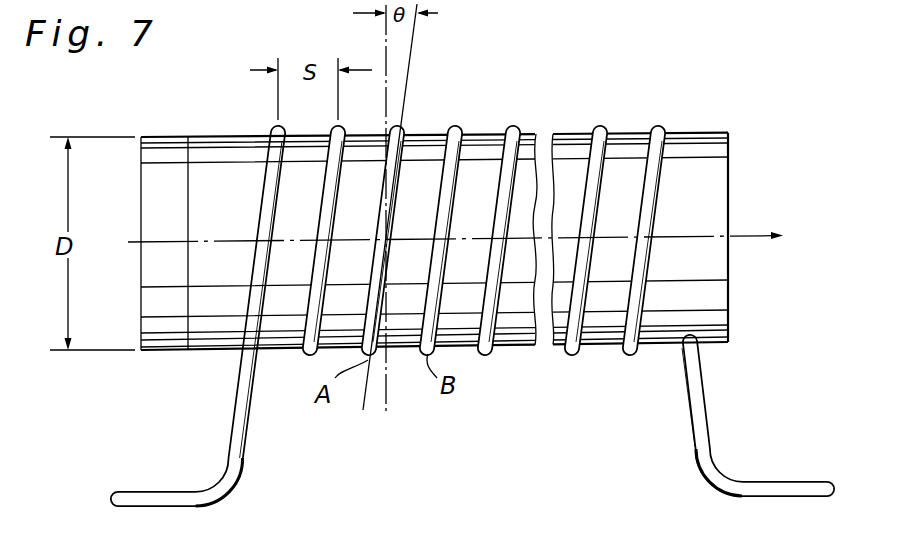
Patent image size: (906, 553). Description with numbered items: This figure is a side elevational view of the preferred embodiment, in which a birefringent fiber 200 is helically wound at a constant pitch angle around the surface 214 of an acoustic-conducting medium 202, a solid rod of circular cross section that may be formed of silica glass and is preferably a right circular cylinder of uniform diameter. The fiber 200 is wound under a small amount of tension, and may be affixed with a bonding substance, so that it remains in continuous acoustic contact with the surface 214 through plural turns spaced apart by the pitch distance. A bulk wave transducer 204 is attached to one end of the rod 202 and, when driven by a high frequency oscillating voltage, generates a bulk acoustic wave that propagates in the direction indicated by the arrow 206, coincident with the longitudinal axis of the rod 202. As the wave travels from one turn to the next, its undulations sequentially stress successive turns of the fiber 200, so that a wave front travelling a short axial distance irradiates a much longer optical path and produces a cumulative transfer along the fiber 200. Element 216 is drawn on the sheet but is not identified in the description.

The birefringent fiber 200 is at (240, 469).
The acoustic-conducting medium 202 is at (434, 244).
The bulk wave transducer 204 is at (163, 146).
The arrow indicating direction of acoustic wave propagation 206 is at (738, 231).
The surface of the acoustic-conducting medium 214 is at (483, 135).
The wire end 216 is at (616, 544).